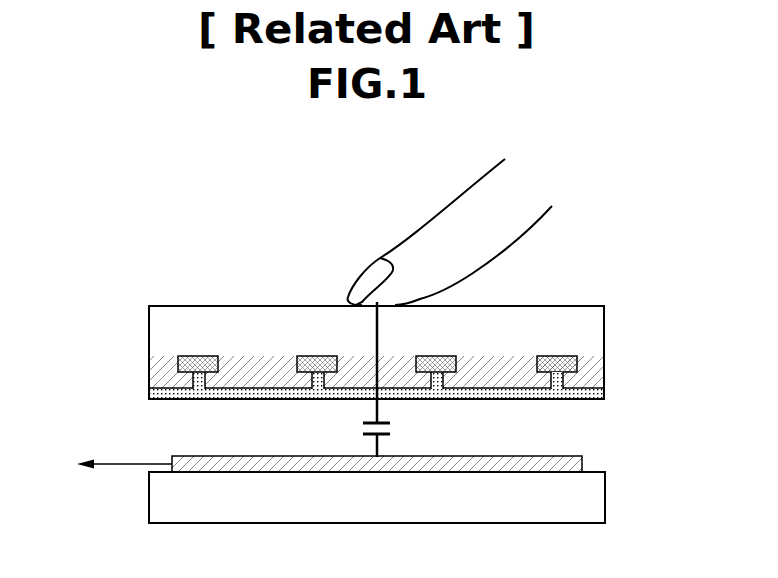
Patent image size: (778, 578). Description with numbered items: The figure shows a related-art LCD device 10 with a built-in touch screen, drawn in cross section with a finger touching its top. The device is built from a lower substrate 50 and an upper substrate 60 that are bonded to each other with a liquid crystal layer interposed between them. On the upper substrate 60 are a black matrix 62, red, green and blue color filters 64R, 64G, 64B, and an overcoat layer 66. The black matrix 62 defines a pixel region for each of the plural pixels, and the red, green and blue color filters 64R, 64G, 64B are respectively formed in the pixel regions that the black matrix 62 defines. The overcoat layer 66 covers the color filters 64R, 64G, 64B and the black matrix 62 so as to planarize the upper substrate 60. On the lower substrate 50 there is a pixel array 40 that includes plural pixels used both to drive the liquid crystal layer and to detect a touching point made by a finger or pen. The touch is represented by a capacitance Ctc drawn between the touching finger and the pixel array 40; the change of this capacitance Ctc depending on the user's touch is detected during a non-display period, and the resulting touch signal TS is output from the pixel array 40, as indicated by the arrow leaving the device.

The touch display device 10 is at (320, 199).
The upper substrate 60 is at (598, 330).
The black matrix 62 is at (568, 366).
The overcoat layer 66 is at (598, 394).
The red color filter 64R is at (226, 371).
The green color filter 64G is at (345, 371).
The blue color filter 64B is at (466, 371).
The pixel array 40 is at (572, 466).
The lower substrate 50 is at (597, 498).
The capacitance Ctc is at (394, 430).
The touch signal TS is at (109, 465).